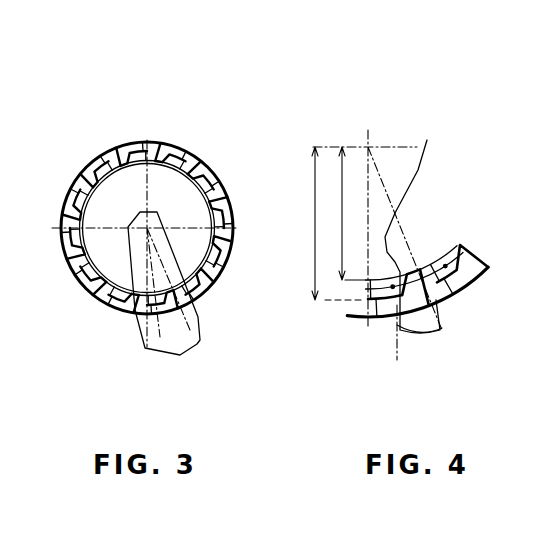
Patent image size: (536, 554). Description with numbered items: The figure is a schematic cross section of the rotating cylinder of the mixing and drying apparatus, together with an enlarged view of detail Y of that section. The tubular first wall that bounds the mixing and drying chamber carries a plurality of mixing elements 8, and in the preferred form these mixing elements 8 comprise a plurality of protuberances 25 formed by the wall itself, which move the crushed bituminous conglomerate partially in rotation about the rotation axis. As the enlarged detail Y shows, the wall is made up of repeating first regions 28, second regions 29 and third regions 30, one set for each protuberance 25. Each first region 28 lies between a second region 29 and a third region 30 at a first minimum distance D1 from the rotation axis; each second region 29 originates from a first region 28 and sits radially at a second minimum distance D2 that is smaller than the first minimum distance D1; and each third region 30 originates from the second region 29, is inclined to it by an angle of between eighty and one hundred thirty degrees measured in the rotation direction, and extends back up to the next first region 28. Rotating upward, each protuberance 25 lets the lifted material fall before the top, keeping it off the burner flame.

In FIG. 3, the mixing elements 8 is at (94, 170).
In FIG. 4, the mixing elements 8 is at (470, 283).
In FIG. 4, the protuberances 25 is at (469, 236).
In FIG. 4, the first region 28 is at (391, 310).
In FIG. 4, the second region 29 is at (432, 262).
In FIG. 4, the third region 30 is at (427, 140).
In FIG. 3, the detail Y is at (200, 323).
In FIG. 4, the first minimum distance D1 is at (315, 222).
In FIG. 4, the second minimum distance D2 is at (340, 201).